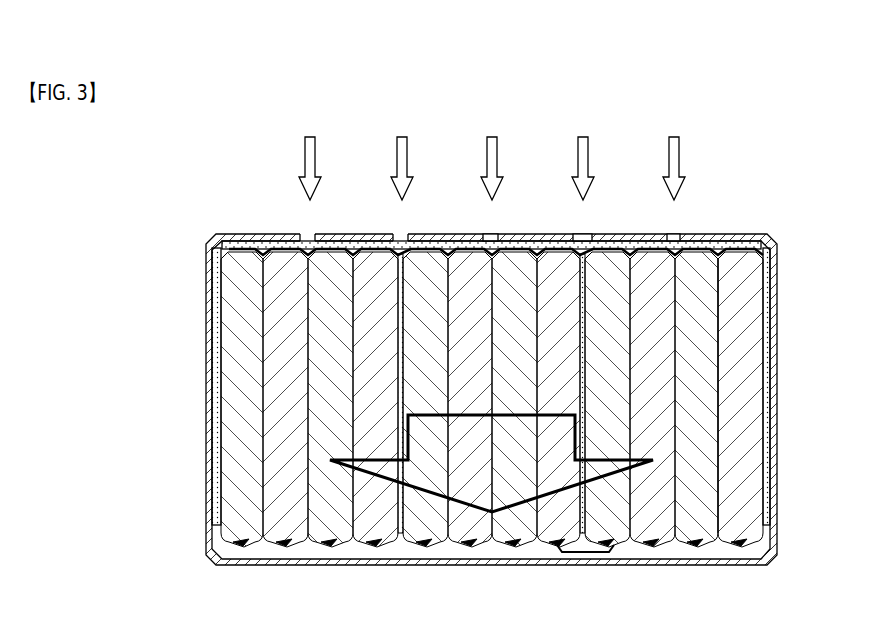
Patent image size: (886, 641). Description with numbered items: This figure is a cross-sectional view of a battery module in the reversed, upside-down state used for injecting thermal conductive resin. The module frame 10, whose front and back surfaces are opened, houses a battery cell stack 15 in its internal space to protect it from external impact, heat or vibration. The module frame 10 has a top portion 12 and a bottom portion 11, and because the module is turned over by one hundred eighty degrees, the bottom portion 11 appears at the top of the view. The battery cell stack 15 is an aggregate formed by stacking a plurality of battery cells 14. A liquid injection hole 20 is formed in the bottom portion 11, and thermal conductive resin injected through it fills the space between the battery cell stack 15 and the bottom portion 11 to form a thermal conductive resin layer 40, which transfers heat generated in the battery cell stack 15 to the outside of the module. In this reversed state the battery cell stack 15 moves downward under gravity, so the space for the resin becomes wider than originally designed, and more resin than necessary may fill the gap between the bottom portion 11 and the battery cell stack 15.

The module frame 10 is at (210, 332).
The bottom portion 11 is at (733, 238).
The top portion 12 is at (612, 565).
The battery cell 14 is at (695, 350).
The battery cell stack 15 is at (718, 408).
The liquid injection hole 20 is at (497, 232).
The thermal conductive resin layer 40 is at (445, 240).